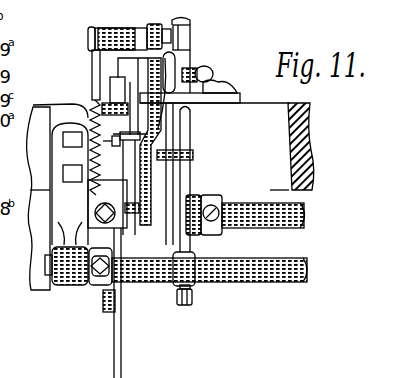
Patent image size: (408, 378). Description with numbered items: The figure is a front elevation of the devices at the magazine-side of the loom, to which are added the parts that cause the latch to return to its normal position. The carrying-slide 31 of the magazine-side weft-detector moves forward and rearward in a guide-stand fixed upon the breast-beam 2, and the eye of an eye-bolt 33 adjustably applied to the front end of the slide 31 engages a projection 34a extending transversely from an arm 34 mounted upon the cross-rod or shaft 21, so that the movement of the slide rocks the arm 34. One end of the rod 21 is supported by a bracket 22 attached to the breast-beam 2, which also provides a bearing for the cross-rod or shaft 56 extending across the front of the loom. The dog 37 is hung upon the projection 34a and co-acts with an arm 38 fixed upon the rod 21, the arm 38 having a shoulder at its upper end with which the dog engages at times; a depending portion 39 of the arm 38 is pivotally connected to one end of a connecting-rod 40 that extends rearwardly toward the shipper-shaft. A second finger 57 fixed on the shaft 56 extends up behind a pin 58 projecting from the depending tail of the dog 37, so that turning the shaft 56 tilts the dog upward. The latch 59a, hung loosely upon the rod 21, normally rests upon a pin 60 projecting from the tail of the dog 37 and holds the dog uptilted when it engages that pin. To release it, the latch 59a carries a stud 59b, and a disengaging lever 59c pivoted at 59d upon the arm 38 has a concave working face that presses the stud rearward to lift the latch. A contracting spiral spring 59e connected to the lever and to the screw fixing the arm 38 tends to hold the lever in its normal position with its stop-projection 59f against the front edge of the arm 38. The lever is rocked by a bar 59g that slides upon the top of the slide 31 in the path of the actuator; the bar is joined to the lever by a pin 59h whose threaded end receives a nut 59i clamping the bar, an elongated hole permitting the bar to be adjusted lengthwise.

The breast-beam 2 is at (311, 177).
The cross-rod or shaft 21 is at (285, 229).
The bracket 22 is at (72, 290).
The carrying-slide 31 is at (182, 60).
The eye-bolt 33 is at (181, 57).
The arm 34 is at (190, 127).
The projection 34a is at (207, 75).
The dog 37 is at (117, 80).
The arm 38 is at (116, 90).
The depending portion 39 is at (110, 315).
The connecting-rod 40 is at (124, 326).
The cross-rod or shaft 56 is at (277, 283).
The second finger 57 is at (191, 175).
The pin 58 is at (194, 154).
The latch 59a is at (134, 181).
The stud or projection 59b is at (80, 149).
The disengaging lever 59c is at (88, 118).
The pivot 59d is at (88, 97).
The contracting spiral spring 59e is at (103, 197).
The stop-projection 59f is at (158, 123).
The bar 59g is at (181, 30).
The pin 59h is at (92, 38).
The nut 59i is at (170, 27).
The pin 60 is at (132, 230).